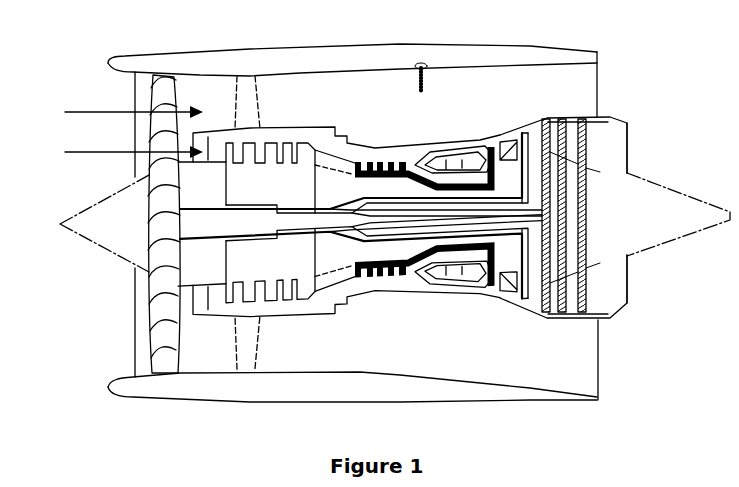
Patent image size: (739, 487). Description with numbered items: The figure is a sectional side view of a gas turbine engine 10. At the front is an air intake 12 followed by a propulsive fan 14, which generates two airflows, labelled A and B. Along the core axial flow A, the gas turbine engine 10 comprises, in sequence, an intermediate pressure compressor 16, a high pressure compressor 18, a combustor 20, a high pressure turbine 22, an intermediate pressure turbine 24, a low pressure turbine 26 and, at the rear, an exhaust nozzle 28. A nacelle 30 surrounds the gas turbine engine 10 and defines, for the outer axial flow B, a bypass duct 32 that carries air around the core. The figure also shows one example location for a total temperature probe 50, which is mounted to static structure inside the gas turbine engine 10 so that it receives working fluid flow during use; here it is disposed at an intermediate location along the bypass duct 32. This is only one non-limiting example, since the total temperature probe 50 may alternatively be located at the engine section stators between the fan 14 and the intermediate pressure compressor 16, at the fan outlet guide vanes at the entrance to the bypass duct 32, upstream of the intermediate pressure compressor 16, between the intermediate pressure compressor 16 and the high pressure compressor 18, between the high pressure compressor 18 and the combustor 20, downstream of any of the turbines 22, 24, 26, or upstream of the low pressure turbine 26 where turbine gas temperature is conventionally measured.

The gas turbine engine 10 is at (91, 52).
The air intake 12 is at (142, 93).
The propulsive fan 14 is at (157, 77).
The intermediate pressure compressor 16 is at (262, 178).
The high pressure compressor 18 is at (378, 162).
The combustor 20 is at (457, 158).
The high pressure turbine 22 is at (491, 147).
The intermediate pressure turbine 24 is at (532, 148).
The low pressure turbine 26 is at (586, 135).
The exhaust nozzle 28 is at (613, 157).
The nacelle 30 is at (237, 211).
The bypass duct 32 is at (407, 108).
The total temperature probe 50 is at (430, 78).